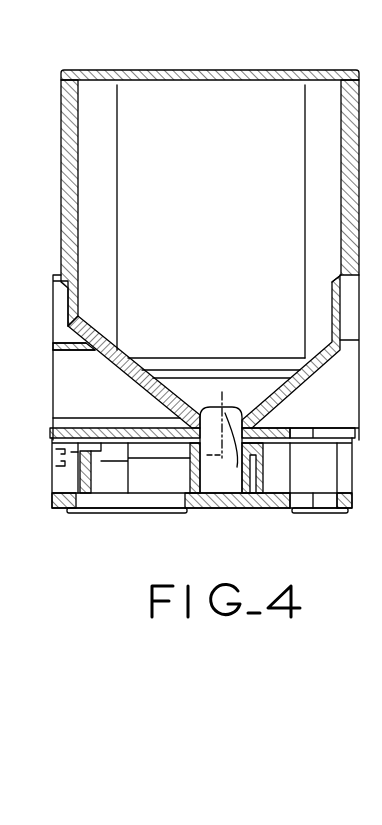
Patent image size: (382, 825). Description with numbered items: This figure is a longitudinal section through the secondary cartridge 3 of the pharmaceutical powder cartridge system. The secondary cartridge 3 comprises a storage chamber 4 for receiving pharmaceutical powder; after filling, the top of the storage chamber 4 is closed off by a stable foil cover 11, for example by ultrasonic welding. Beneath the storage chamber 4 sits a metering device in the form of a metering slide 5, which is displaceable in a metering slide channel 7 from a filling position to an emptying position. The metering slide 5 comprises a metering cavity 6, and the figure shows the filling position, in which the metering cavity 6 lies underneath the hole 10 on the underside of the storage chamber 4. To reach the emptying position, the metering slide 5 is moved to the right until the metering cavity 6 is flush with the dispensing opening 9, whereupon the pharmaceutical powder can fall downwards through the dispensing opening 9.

The secondary cartridge 3 is at (61, 194).
The storage chamber 4 is at (188, 229).
The metering slide 5 is at (88, 472).
The metering cavity 6 is at (208, 507).
The metering slide channel 7 is at (276, 468).
The dispensing opening 9 is at (303, 502).
The hole 10 is at (218, 480).
The foil cover 11 is at (184, 71).